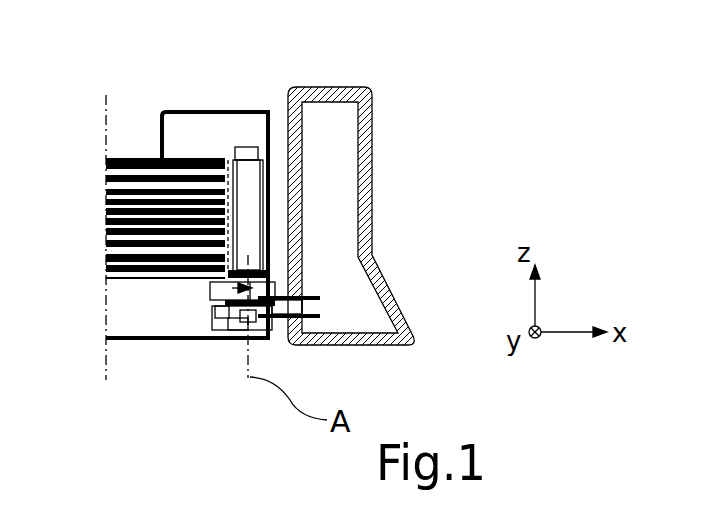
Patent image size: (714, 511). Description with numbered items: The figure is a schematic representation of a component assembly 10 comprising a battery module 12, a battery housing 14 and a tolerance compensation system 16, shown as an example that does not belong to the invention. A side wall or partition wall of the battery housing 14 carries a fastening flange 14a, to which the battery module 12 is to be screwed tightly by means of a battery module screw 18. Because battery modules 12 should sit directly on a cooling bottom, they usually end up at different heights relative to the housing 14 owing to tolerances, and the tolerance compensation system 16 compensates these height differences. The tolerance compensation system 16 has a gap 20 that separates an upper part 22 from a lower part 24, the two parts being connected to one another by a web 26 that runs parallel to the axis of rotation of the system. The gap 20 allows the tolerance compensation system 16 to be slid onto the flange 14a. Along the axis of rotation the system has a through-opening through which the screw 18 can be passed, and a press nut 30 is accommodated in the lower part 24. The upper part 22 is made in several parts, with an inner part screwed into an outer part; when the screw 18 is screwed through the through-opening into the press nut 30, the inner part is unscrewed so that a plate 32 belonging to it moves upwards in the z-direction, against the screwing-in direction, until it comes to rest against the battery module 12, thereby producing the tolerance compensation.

The component assembly 10 is at (334, 66).
The battery module 12 is at (196, 128).
The battery housing 14 is at (387, 124).
The fastening flange 14a is at (302, 297).
The tolerance compensation system 16 is at (210, 287).
The battery module screw 18 is at (242, 136).
The gap 20 is at (275, 300).
The upper part 22 is at (262, 290).
The lower part 24 is at (233, 328).
The web 26 is at (214, 303).
The press nut 30 is at (300, 318).
The plate 32 is at (250, 282).